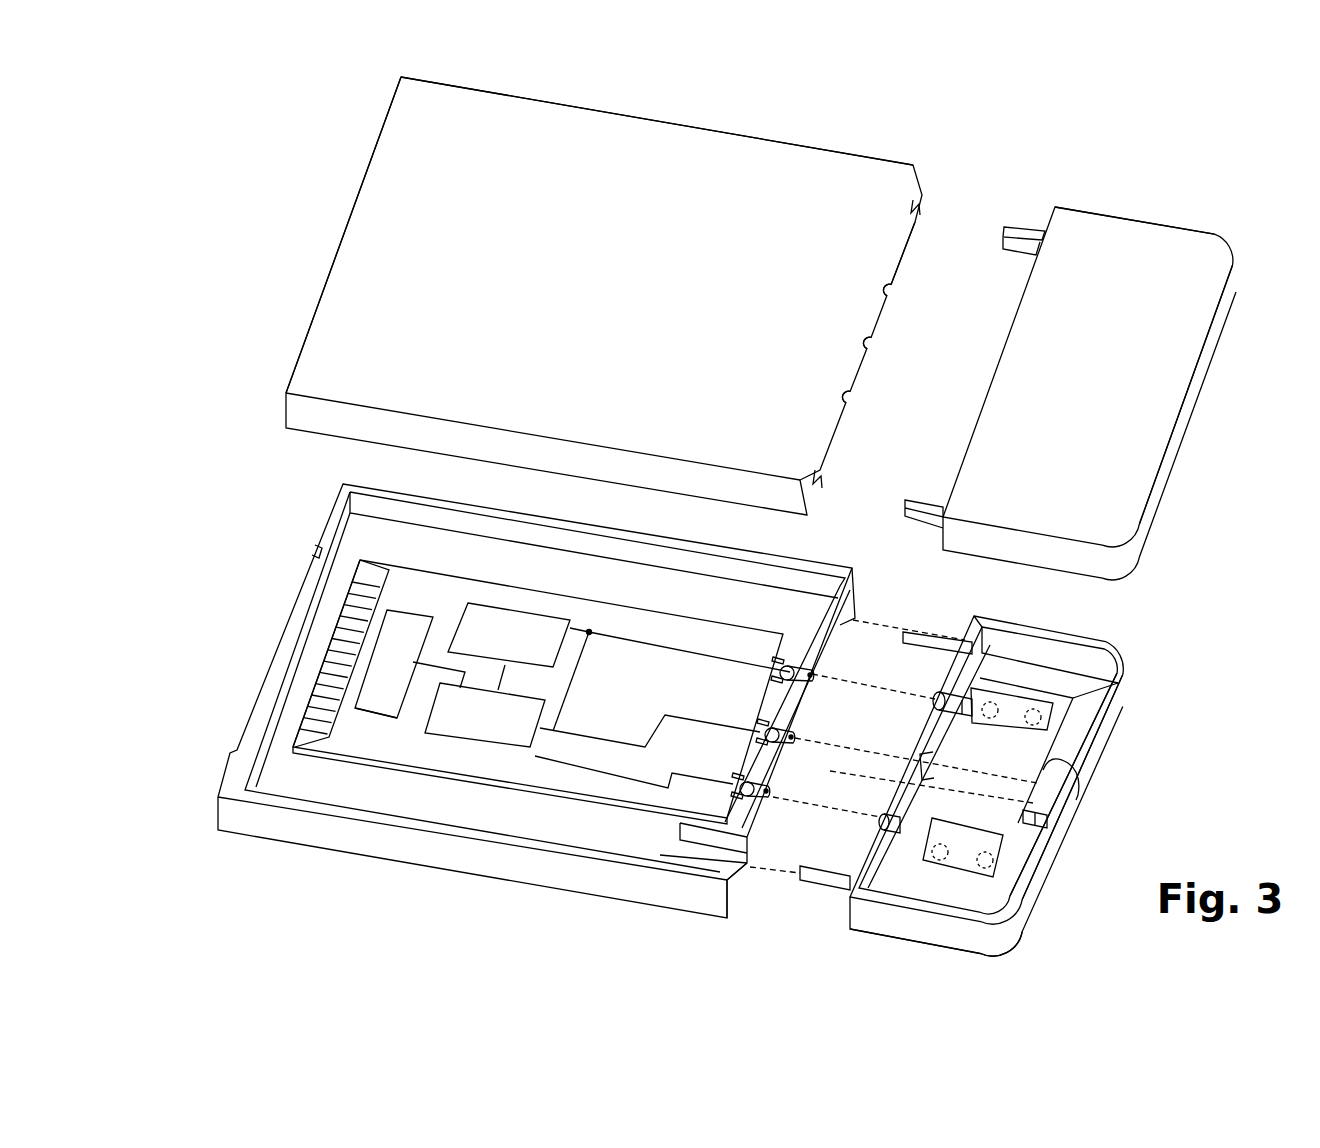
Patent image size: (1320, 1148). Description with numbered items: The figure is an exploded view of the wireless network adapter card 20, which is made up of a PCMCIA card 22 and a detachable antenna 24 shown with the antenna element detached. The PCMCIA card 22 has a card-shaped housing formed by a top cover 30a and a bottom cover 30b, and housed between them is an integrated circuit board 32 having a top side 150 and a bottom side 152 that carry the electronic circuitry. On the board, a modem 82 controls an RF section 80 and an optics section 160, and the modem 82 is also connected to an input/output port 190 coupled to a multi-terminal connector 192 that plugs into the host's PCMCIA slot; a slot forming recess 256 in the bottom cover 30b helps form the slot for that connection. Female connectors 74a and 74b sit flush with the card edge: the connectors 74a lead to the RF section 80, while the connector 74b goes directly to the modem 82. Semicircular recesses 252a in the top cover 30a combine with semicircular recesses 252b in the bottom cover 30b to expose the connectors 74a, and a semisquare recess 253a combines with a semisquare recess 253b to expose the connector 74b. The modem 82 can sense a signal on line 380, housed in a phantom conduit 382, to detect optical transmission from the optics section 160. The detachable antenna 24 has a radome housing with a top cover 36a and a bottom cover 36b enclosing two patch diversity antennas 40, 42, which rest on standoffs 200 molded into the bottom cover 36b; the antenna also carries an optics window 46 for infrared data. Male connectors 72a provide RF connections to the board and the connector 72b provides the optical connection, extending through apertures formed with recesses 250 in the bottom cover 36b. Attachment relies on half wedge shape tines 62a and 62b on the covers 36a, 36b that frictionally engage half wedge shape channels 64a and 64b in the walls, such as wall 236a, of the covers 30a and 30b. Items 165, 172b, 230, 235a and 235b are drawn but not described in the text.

The wireless network adapter card 20 is at (282, 242).
The PCMCIA card 22 is at (832, 122).
The detachable antenna 24 is at (1156, 132).
The top cover 30a is at (305, 368).
The bottom cover 30b is at (243, 822).
The integrated circuit board 32 is at (350, 742).
The top cover 36a is at (1183, 236).
The bottom cover 36b is at (1080, 633).
The patch type diversity antenna 40 is at (983, 728).
The patch type diversity antenna 42 is at (935, 825).
The optics window 46 is at (1085, 812).
The half wedge shape tine 62a is at (1030, 232).
The half wedge shape tine 62b is at (938, 628).
The half wedge shape channel 64a is at (922, 220).
The half wedge shape channel 64b is at (838, 605).
The male plug-type connector 72a is at (932, 694).
The male plug-type connector 72b is at (915, 755).
The female-type connector 74a is at (790, 662).
The female-type connector 74b is at (758, 716).
The RF section 80 is at (475, 602).
The modem 82 is at (487, 745).
The top side 150 is at (380, 750).
The bottom side 152 is at (415, 770).
The optics section 160 is at (1060, 767).
The latch 165 is at (1045, 762).
The side wall 172b is at (1093, 786).
The input/output port 190 is at (393, 600).
The multi-terminal connector 192 is at (300, 720).
The standoffs 200 is at (1000, 691).
The cavity 230 is at (1018, 739).
The rounded end 235a is at (1215, 330).
The rounded end 235b is at (1080, 912).
The wall 236a is at (893, 245).
The recesses 250 is at (870, 880).
The semicircular recess 252a is at (890, 298).
The semicircular recess 252b is at (820, 663).
The semisquare recess 253a is at (872, 343).
The semisquare recess 253b is at (905, 766).
The slot forming recess 256 is at (303, 600).
The line 380 is at (808, 745).
The conduit 382 is at (948, 787).